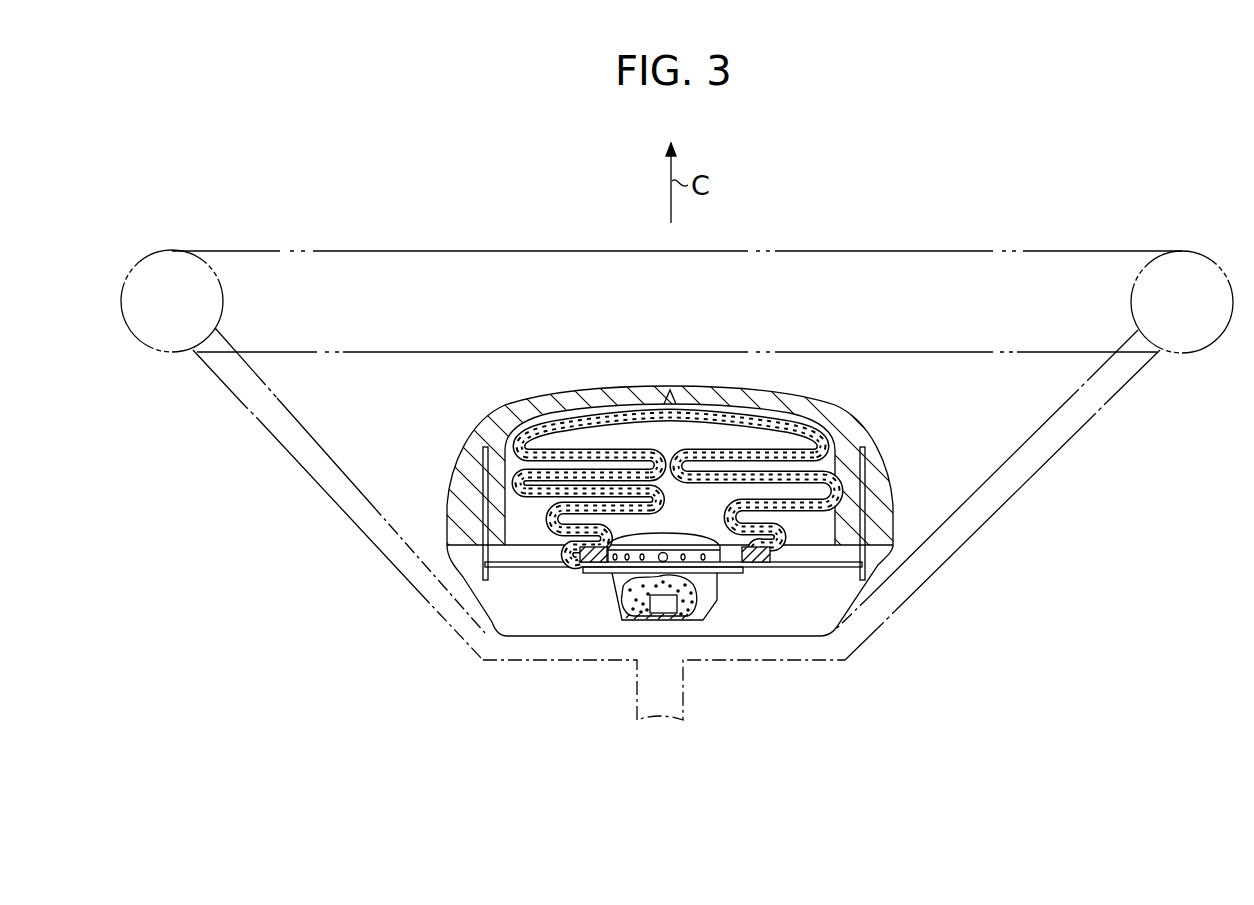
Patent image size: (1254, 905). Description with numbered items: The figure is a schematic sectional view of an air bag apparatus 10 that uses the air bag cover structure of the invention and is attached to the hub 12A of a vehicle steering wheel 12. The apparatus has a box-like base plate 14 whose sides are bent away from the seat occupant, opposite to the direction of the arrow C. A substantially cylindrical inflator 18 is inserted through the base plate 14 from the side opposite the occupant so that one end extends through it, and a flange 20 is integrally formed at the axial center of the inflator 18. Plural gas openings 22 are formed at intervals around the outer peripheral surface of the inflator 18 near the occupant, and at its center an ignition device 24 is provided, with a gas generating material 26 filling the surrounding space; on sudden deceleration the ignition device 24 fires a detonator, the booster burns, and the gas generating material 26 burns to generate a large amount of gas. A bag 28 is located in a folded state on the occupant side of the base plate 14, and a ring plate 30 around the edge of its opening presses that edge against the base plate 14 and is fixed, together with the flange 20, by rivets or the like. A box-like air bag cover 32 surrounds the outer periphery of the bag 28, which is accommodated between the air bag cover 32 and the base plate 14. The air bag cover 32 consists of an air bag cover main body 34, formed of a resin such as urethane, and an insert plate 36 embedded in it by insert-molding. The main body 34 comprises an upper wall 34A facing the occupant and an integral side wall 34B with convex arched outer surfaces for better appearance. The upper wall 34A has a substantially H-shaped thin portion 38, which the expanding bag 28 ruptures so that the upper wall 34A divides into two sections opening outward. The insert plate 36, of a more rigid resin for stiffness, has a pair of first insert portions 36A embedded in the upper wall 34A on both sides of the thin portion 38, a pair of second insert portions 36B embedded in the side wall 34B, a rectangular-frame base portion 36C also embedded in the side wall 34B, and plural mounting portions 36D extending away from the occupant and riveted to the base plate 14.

The air bag apparatus 10 is at (885, 421).
The steering wheel 12 is at (827, 251).
The hub 12A is at (815, 661).
The base plate 14 is at (536, 568).
The inflator 18 is at (723, 604).
The flange 20 is at (731, 575).
The gas openings 22 is at (652, 560).
The ignition device 24 is at (660, 611).
The gas generating material 26 is at (628, 587).
The bag 28 is at (768, 391).
The ring plate 30 is at (762, 558).
The air bag cover 32 is at (198, 488).
The air bag cover main body 34 is at (253, 470).
The upper wall 34A is at (520, 402).
The side wall 34B is at (516, 444).
The insert plate 36 is at (253, 546).
The first insert portions 36A is at (518, 500).
The second insert portions 36B is at (518, 483).
The base portion 36C is at (556, 520).
The mounting portions 36D is at (565, 552).
The thin portion 38 is at (670, 386).